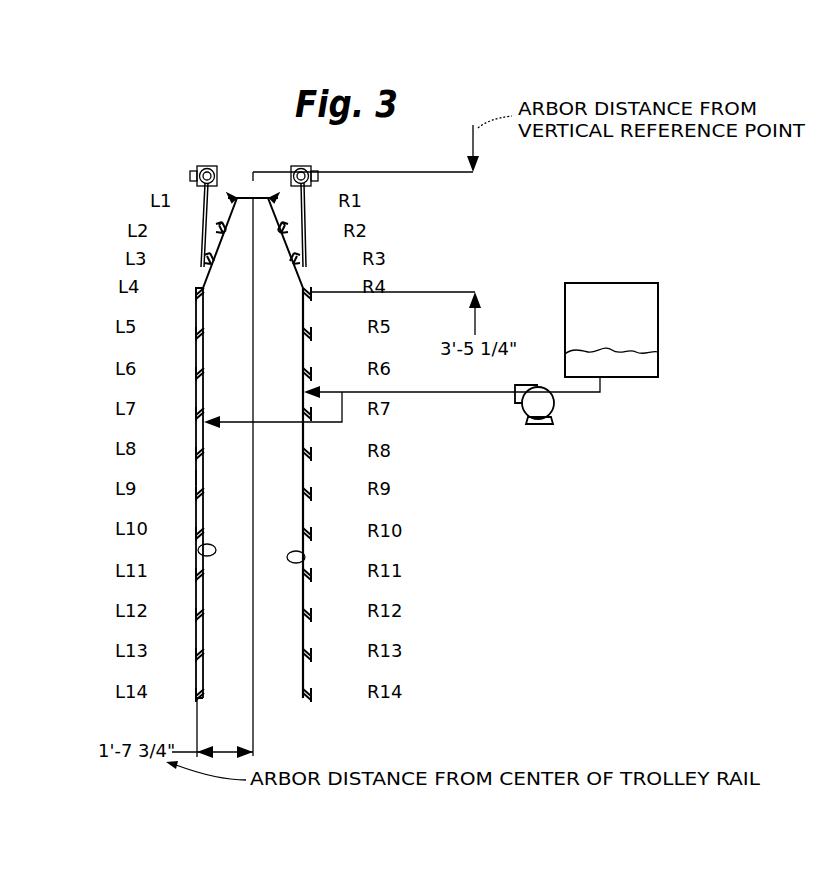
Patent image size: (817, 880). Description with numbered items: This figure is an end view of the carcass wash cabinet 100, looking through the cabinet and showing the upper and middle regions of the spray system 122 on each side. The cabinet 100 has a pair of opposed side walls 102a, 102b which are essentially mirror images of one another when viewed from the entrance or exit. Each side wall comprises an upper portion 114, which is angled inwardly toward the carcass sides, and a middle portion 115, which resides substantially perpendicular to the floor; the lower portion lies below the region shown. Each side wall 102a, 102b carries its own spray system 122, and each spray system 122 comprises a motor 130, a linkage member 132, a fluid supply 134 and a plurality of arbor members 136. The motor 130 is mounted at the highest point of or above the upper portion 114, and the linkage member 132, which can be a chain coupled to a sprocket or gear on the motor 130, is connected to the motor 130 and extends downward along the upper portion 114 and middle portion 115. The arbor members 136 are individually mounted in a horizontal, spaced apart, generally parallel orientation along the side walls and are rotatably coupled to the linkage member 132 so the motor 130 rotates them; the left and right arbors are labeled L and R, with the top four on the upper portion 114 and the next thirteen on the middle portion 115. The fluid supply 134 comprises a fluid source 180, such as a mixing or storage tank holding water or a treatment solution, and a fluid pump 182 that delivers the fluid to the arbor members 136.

The carcass wash cabinet 100 is at (428, 463).
The opposed side wall 102a is at (198, 550).
The opposed side wall 102b is at (304, 557).
The upper portion 114 is at (203, 286).
The middle portion 115 is at (196, 477).
The spray system 122 is at (195, 372).
The motor 130 is at (200, 168).
The linkage member 132 is at (203, 208).
The fluid supply 134 is at (611, 335).
The arbor member 136 is at (218, 229).
The fluid source 180 is at (645, 365).
The fluid pump 182 is at (554, 406).